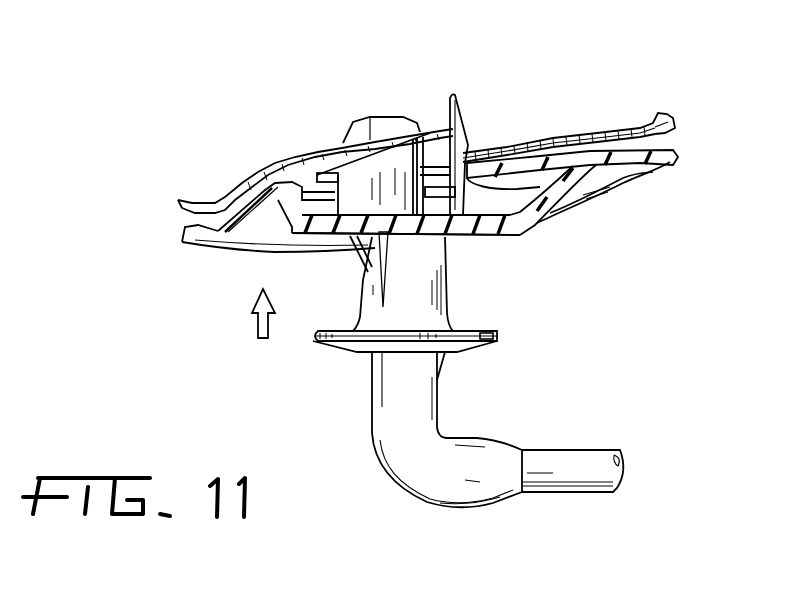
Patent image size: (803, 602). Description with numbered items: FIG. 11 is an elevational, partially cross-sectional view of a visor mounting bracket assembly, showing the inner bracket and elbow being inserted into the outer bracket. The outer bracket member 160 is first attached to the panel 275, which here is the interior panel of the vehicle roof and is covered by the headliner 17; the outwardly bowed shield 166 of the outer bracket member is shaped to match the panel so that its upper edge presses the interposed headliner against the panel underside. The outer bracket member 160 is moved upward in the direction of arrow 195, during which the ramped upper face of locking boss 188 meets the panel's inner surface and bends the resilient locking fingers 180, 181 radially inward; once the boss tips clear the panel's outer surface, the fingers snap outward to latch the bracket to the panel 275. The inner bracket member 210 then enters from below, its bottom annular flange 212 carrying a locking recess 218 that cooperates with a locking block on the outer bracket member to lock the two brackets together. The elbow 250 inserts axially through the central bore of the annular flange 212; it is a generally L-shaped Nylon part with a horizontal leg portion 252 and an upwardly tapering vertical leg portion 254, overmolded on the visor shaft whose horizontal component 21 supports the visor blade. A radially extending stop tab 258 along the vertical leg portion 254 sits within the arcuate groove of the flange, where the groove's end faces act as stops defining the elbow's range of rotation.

The headliner 17 is at (653, 173).
The visor shaft horizontal component 21 is at (587, 477).
The outer bracket member 160 is at (541, 223).
The shield 166 is at (577, 192).
The locking finger 180 is at (452, 92).
The locking finger 181 is at (367, 120).
The locking boss 188 is at (473, 142).
The arrow 195 is at (257, 327).
The inner bracket member 210 is at (448, 290).
The annular flange 212 is at (330, 333).
The locking recess 218 is at (494, 336).
The elbow 250 is at (397, 490).
The horizontal leg portion 252 is at (490, 496).
The vertical leg portion 254 is at (382, 405).
The stop tab 258 is at (447, 360).
The panel 275 is at (653, 123).